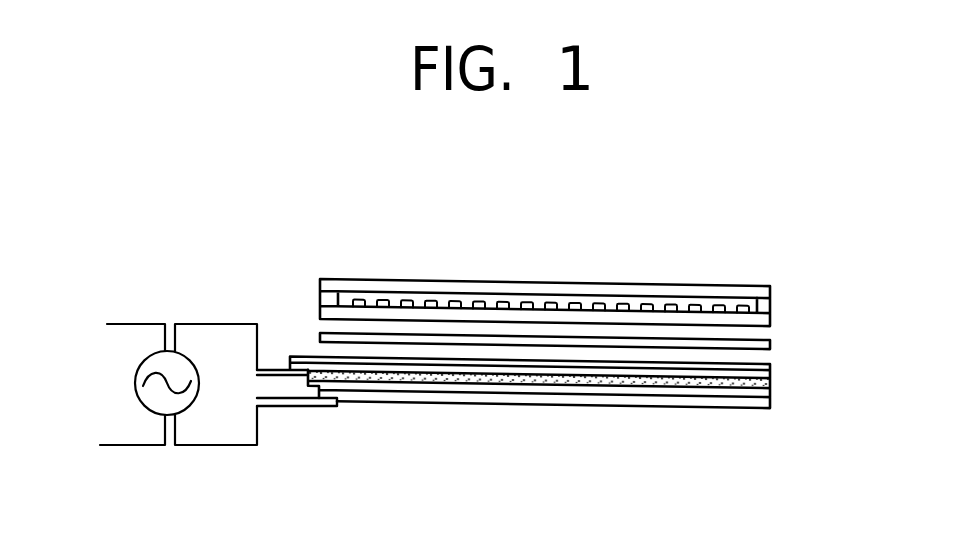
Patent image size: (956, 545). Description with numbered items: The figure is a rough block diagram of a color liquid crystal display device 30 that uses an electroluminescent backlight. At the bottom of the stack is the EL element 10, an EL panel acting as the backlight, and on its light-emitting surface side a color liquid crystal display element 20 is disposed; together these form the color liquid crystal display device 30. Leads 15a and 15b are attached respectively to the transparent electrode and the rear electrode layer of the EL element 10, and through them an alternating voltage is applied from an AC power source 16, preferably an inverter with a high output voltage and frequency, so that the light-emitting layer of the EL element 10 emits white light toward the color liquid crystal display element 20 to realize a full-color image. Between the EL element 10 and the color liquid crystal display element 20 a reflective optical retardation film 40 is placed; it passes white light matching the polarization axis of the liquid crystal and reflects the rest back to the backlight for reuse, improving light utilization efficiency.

The EL element 10 is at (771, 388).
The lead 15a is at (280, 368).
The lead 15b is at (283, 410).
The AC power source 16 is at (134, 378).
The color liquid crystal display element 20 is at (771, 299).
The color liquid crystal display device 30 is at (596, 276).
The reflective optical retardation film 40 is at (771, 345).